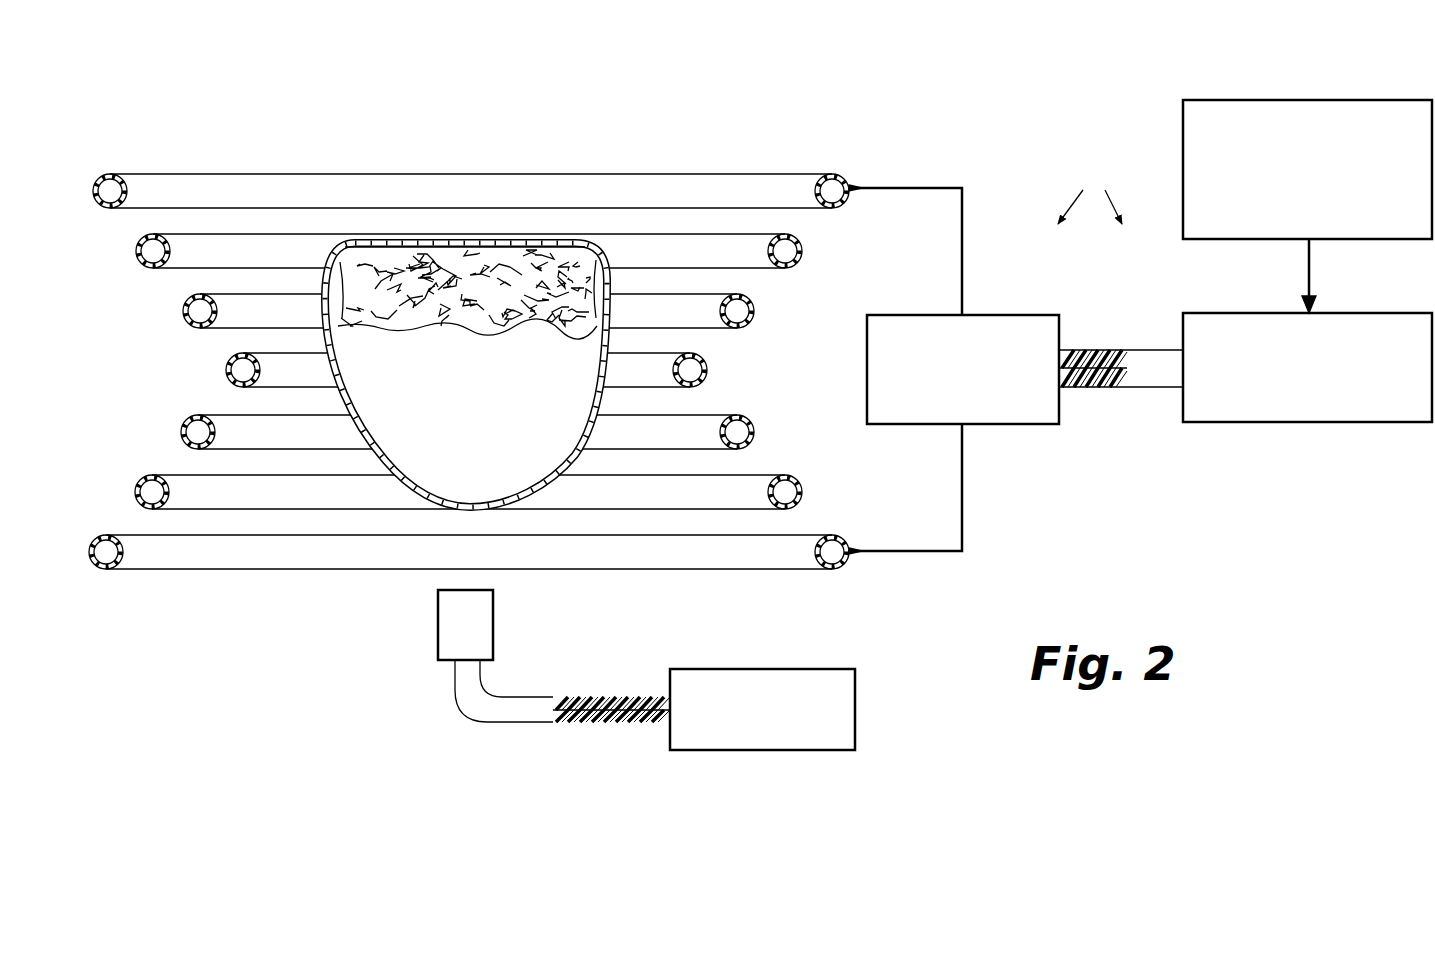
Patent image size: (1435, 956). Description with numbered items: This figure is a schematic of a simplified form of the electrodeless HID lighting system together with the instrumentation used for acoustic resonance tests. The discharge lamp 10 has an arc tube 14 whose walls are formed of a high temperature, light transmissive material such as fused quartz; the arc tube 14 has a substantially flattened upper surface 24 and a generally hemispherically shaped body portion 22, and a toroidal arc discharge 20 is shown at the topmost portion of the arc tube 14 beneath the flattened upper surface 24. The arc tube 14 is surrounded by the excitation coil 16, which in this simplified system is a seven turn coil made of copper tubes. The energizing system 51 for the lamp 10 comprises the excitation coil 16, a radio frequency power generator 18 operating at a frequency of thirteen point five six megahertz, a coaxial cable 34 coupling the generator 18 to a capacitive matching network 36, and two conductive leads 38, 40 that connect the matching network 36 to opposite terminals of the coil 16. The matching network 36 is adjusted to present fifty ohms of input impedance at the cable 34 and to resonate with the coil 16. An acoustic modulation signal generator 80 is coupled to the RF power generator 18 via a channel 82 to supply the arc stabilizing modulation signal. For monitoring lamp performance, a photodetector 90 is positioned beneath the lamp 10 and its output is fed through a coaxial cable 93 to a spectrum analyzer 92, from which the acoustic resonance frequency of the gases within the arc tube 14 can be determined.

The discharge lamp 10 is at (360, 524).
The arc tube 14 is at (522, 498).
The excitation coil 16 is at (800, 256).
The radio frequency power generator 18 is at (1245, 423).
The arc discharge 20 is at (420, 325).
The hemispherically shaped body portion 22 is at (408, 480).
The flattened upper surface 24 is at (412, 240).
The coaxial cable 34 is at (1137, 348).
The capacitive matching network 36 is at (1040, 314).
The conductive lead 38 is at (963, 215).
The conductive lead 40 is at (963, 478).
The energizing system 51 is at (1112, 184).
The acoustic modulation signal generator 80 is at (1229, 99).
The channel 82 is at (1306, 264).
The photodetector 90 is at (438, 665).
The spectrum analyzer 92 is at (855, 668).
The coaxial cable 93 is at (458, 710).